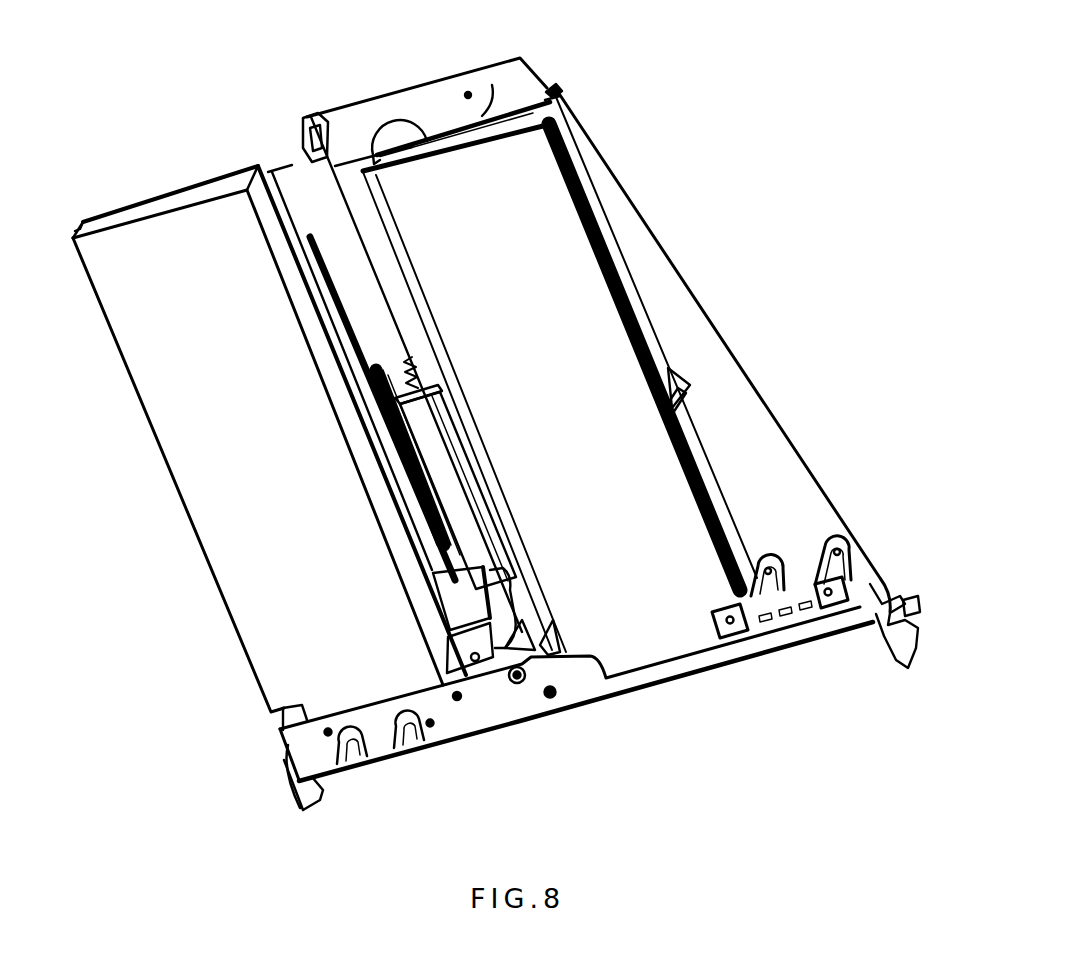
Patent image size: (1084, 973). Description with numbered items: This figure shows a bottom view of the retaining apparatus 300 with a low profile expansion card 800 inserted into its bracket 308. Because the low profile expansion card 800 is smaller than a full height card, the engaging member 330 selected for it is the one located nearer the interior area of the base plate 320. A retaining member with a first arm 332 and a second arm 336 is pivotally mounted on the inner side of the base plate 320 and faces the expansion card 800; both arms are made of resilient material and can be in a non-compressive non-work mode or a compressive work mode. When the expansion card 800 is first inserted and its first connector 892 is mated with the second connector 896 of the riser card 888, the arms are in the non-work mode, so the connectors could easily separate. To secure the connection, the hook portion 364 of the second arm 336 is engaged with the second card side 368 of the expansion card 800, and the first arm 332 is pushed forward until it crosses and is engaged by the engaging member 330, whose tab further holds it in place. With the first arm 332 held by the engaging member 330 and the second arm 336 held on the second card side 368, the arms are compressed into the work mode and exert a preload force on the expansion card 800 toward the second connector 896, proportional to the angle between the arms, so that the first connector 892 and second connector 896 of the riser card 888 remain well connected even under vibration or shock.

The retaining apparatus 300 is at (706, 304).
The bracket 308 is at (791, 518).
The base plate 320 is at (779, 467).
The engaging member 330 is at (492, 85).
The first arm 332 is at (558, 90).
The second arm 336 is at (684, 382).
The hook portion 364 is at (684, 409).
The second card side 368 is at (621, 282).
The low profile expansion card 800 is at (558, 261).
The riser card 888 is at (303, 145).
The first connector 892 is at (468, 456).
The second connector 896 is at (480, 559).